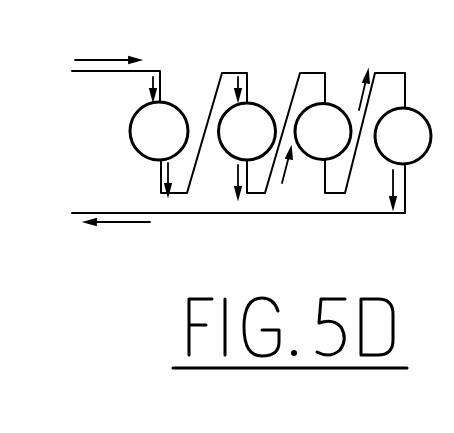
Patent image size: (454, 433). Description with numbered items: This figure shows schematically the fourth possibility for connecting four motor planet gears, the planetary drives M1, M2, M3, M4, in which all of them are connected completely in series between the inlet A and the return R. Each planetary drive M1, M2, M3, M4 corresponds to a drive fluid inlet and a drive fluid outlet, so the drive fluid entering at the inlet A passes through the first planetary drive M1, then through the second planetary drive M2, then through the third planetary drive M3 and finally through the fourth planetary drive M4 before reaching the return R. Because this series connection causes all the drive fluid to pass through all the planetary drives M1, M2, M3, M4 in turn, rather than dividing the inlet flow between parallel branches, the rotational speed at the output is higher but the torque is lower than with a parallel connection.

The inlet A is at (62, 72).
The return R is at (63, 223).
The planetary drive M1 is at (144, 143).
The planetary drive M2 is at (231, 143).
The planetary drive M3 is at (308, 143).
The planetary drive M4 is at (389, 143).